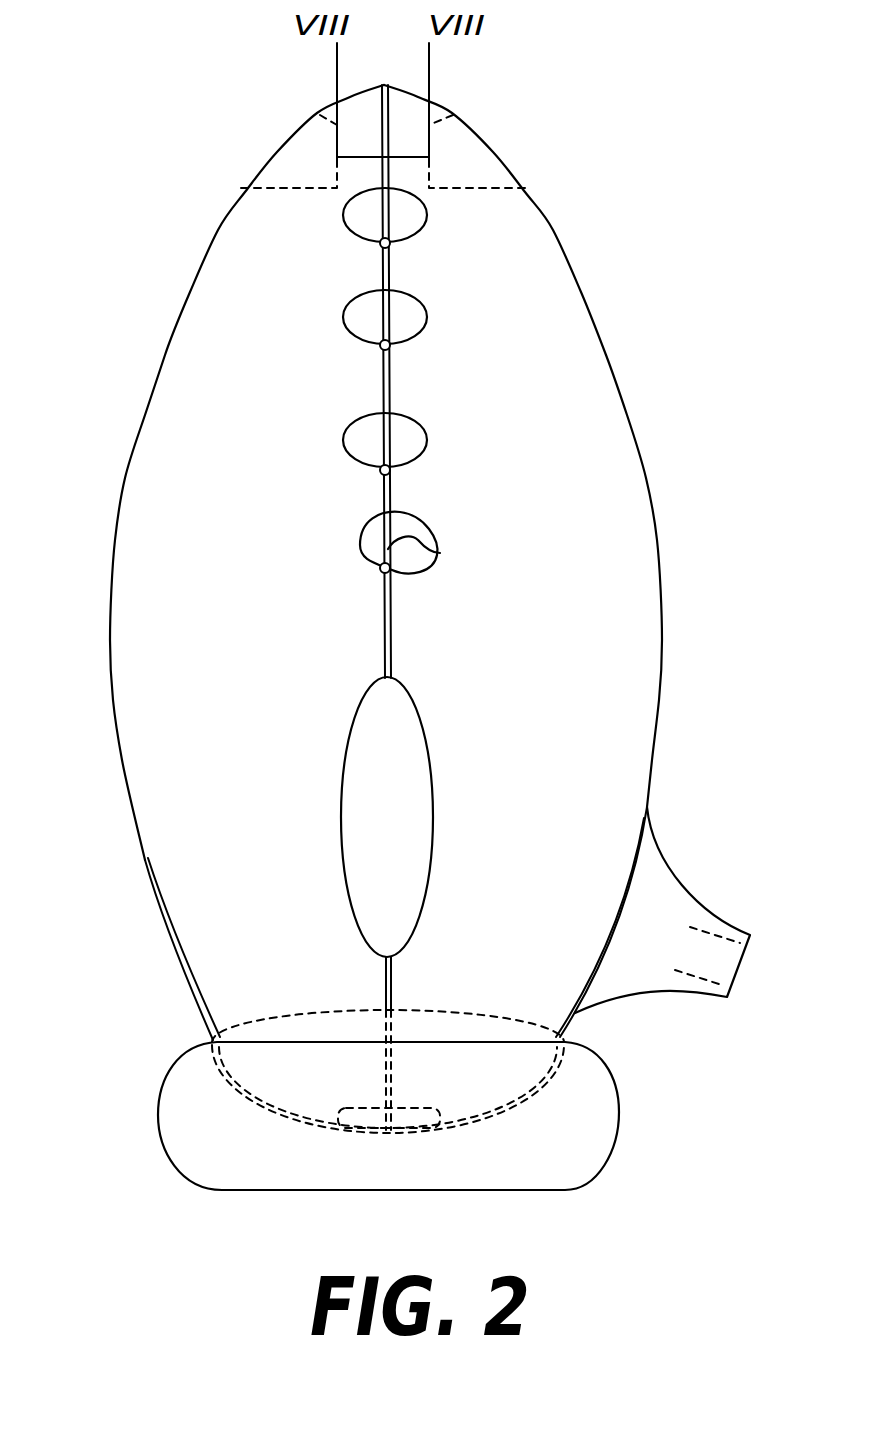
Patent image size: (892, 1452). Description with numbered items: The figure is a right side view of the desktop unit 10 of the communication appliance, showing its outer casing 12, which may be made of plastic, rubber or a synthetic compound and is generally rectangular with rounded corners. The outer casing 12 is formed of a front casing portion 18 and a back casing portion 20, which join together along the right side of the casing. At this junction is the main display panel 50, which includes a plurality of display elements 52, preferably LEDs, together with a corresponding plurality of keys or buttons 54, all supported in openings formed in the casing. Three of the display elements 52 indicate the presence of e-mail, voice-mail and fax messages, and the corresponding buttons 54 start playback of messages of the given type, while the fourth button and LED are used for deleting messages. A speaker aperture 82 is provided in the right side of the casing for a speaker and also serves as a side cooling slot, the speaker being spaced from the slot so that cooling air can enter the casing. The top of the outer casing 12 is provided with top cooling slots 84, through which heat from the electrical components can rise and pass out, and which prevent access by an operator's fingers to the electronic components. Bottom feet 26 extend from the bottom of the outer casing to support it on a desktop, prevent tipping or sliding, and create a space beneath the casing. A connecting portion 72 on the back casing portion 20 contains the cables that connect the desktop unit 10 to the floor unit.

The desktop unit 10 is at (667, 313).
The outer casing 12 is at (567, 252).
The front casing portion 18 is at (141, 498).
The back casing portion 20 is at (615, 421).
The bottom feet 26 is at (603, 1112).
The main display panel 50 is at (392, 388).
The display elements 52 is at (391, 571).
The buttons 54 is at (438, 553).
The connecting portion 72 is at (671, 900).
The speaker aperture 82 is at (413, 772).
The top cooling slot 84 is at (290, 150).